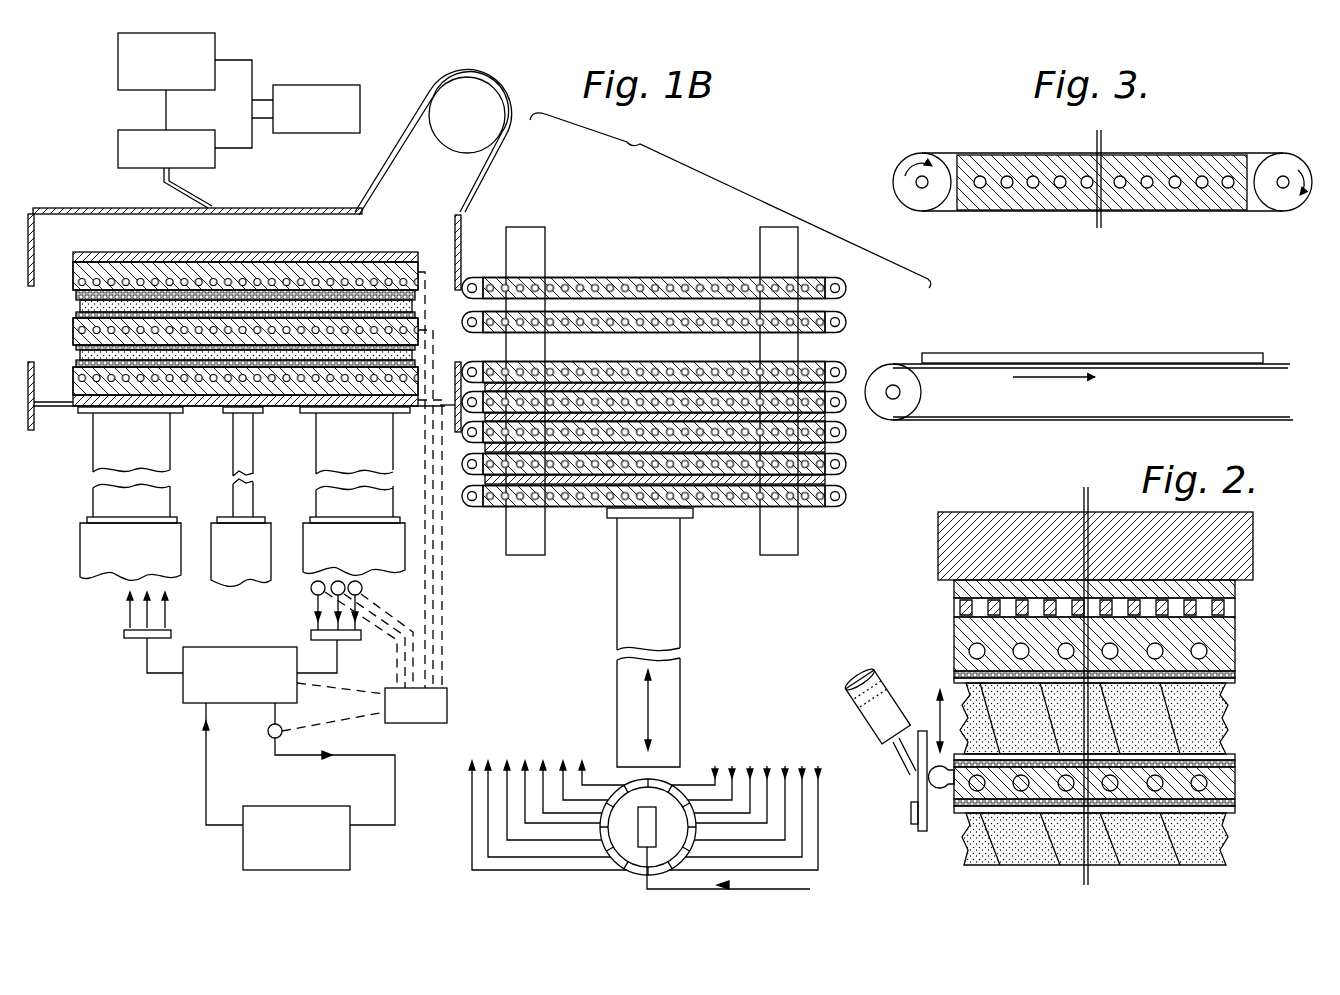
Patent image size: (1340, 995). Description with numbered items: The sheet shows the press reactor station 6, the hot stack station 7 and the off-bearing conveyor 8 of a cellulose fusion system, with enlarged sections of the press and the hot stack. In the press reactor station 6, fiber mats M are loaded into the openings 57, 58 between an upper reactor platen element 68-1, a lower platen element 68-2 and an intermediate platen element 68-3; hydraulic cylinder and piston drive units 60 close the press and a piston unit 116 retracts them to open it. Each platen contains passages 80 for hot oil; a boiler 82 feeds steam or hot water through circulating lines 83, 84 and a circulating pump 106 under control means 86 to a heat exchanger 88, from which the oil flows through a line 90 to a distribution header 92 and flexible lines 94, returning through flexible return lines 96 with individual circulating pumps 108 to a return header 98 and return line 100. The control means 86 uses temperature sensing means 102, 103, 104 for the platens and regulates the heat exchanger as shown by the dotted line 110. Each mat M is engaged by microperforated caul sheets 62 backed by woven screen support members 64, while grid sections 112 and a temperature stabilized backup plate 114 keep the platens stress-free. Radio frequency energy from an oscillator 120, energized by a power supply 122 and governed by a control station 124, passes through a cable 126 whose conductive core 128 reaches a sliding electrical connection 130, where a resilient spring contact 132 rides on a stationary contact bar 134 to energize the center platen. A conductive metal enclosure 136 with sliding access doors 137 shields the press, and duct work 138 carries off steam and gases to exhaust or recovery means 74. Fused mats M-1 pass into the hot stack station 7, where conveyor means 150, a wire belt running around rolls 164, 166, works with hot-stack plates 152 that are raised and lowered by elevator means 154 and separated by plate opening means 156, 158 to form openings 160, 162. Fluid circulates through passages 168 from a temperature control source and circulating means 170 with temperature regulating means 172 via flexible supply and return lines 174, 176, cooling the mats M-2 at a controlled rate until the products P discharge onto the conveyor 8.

In FIG. 1B, the press reactor station 6 is at (77, 122).
In FIG. 1B, the hot stack station 7 is at (626, 232).
In FIG. 1B, the off-bearing conveyor 8 is at (1283, 363).
In FIG. 1B, the opening 57 is at (78, 303).
In FIG. 2, the opening 57 is at (1245, 731).
In FIG. 1B, the opening 58 is at (78, 353).
In FIG. 2, the opening 58 is at (1245, 858).
In FIG. 1B, the hydraulic cylinder and piston drive units 60 is at (120, 554).
In FIG. 2, the microperforated caul sheets 62 is at (1237, 681).
In FIG. 2, the support member 64 is at (1237, 673).
In FIG. 1B, the upper reactor platen element 68-1 is at (100, 276).
In FIG. 2, the upper reactor platen element 68-1 is at (1235, 643).
In FIG. 1B, the lower platen element 68-2 is at (203, 385).
In FIG. 1B, the intermediate platen element 68-3 is at (192, 322).
In FIG. 2, the intermediate platen element 68-3 is at (1230, 784).
In FIG. 1B, the exhaust or recovery means 74 is at (470, 75).
In FIG. 2, the passages 80 is at (968, 650).
In FIG. 1B, the boiler 82 is at (243, 845).
In FIG. 1B, the circulating line 83 is at (206, 792).
In FIG. 1B, the circulating line 84 is at (345, 757).
In FIG. 1B, the control means 86 is at (448, 706).
In FIG. 1B, the heat exchanger 88 is at (186, 702).
In FIG. 1B, the line 90 is at (178, 673).
In FIG. 1B, the distribution header 92 is at (172, 634).
In FIG. 1B, the flexible lines 94 is at (170, 603).
In FIG. 1B, the flexible return lines 96 is at (338, 609).
In FIG. 1B, the return header 98 is at (311, 636).
In FIG. 1B, the return line 100 is at (338, 650).
In FIG. 1B, the temperature sensing means 102 is at (446, 602).
In FIG. 1B, the temperature sensing means 103 is at (435, 655).
In FIG. 1B, the temperature sensing means 104 is at (442, 624).
In FIG. 1B, the circulating pump 106 is at (268, 735).
In FIG. 1B, the circulating pumps 108 is at (330, 581).
In FIG. 1B, the dotted line 110 is at (350, 692).
In FIG. 2, the grid sections 112 is at (1235, 601).
In FIG. 2, the temperature stabilized backup plate 114 is at (1255, 540).
In FIG. 1B, the piston unit 116 is at (228, 554).
In FIG. 1B, the radio frequency oscillator 120 is at (118, 146).
In FIG. 1B, the power supply 122 is at (218, 48).
In FIG. 1B, the control station 124 is at (350, 85).
In FIG. 1B, the cable 126 is at (195, 200).
In FIG. 2, the cable 126 is at (857, 695).
In FIG. 2, the conductive core 128 is at (893, 760).
In FIG. 2, the sliding electrical connection 130 is at (905, 808).
In FIG. 2, the resilient spring contact 132 is at (937, 780).
In FIG. 2, the stationary contact bar 134 is at (918, 830).
In FIG. 1B, the conductive metal enclosure 136 is at (70, 209).
In FIG. 1B, the sliding access doors 137 is at (26, 237).
In FIG. 1B, the duct work 138 is at (490, 155).
In FIG. 3, the conveyor means 150 is at (945, 153).
In FIG. 1B, the hot-stack plates 152 is at (645, 278).
In FIG. 3, the hot-stack plates 152 is at (1220, 156).
In FIG. 1B, the elevator means 154 is at (682, 625).
In FIG. 1B, the plate opening means 156 is at (535, 236).
In FIG. 1B, the plate opening means 158 is at (758, 234).
In FIG. 1B, the opening 160 is at (815, 306).
In FIG. 1B, the opening 162 is at (826, 353).
In FIG. 1B, the rolls 164 is at (472, 280).
In FIG. 3, the rolls 164 is at (892, 172).
In FIG. 1B, the rolls 166 is at (848, 288).
In FIG. 3, the rolls 166 is at (1283, 153).
In FIG. 1B, the passages 168 is at (728, 283).
In FIG. 3, the passages 168 is at (980, 188).
In FIG. 1B, the temperature control source and circulating means 170 is at (672, 790).
In FIG. 1B, the temperature regulating means 172 is at (643, 845).
In FIG. 1B, the flexible supply line 174 is at (506, 827).
In FIG. 1B, the flexible return line 176 is at (802, 845).
In FIG. 2, the mat M is at (1230, 723).
In FIG. 1B, the fused cellulose mats M-1 is at (305, 302).
In FIG. 1B, the mats M-2 is at (660, 392).
In FIG. 1B, the product P is at (1143, 353).